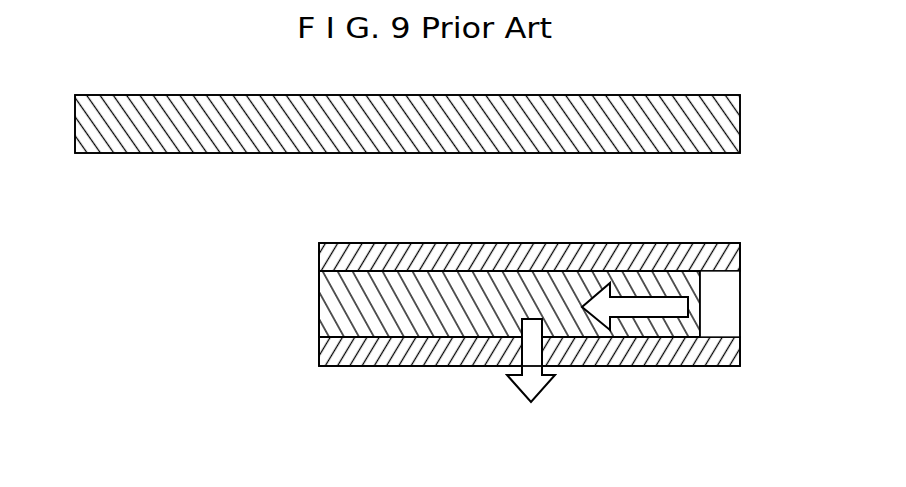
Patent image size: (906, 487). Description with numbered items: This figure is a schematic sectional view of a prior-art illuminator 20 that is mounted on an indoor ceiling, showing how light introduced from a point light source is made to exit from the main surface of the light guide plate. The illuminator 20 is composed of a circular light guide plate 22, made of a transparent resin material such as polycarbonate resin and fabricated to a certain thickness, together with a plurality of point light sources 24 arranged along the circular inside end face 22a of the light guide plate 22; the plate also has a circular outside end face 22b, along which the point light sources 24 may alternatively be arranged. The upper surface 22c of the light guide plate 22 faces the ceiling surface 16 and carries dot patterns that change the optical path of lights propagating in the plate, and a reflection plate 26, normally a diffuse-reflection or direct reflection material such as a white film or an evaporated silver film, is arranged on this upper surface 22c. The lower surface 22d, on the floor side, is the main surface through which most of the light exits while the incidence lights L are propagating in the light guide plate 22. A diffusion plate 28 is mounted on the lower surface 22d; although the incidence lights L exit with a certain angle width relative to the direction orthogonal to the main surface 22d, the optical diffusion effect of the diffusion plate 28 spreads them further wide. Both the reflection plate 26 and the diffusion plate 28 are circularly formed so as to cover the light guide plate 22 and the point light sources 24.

The ceiling surface 16 is at (150, 155).
The illuminator 20 is at (501, 324).
The light guide plate 22 is at (440, 271).
The inside end face 22a is at (701, 305).
The outside end face 22b is at (318, 292).
The upper surface 22c is at (625, 270).
The lower surface 22d is at (637, 339).
The point light source 24 is at (740, 324).
The reflection plate 26 is at (518, 243).
The diffusion plate 28 is at (415, 367).
The incidence lights L is at (666, 297).